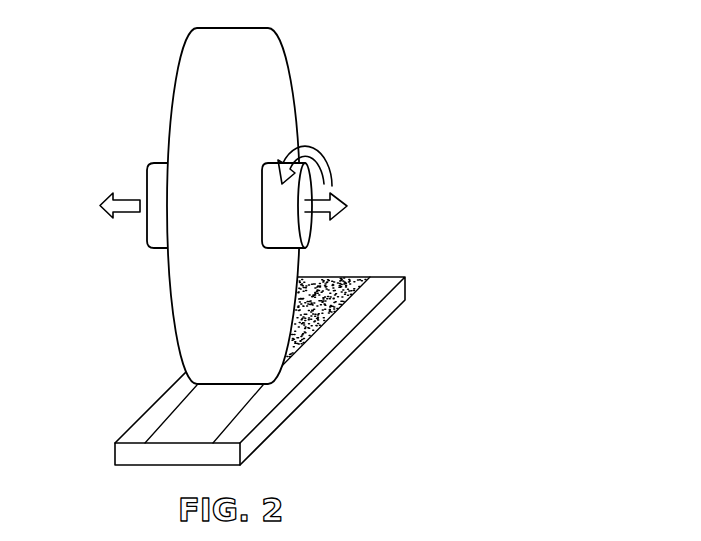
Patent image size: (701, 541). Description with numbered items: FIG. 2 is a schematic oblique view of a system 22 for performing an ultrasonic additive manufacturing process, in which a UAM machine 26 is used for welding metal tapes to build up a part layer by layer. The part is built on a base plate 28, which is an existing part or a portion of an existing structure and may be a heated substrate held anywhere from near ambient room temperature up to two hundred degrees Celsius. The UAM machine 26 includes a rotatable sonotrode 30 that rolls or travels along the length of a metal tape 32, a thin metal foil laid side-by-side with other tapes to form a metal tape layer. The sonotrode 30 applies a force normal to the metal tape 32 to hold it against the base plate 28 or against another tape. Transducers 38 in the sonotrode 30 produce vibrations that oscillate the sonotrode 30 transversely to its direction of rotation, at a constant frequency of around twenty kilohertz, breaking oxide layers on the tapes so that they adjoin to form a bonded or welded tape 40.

The system 22 is at (259, 192).
The UAM machine 26 is at (325, 145).
The base plate 28 is at (260, 371).
The sonotrode 30 is at (270, 70).
The metal tape 32 is at (203, 413).
The transducers 38 is at (157, 182).
The bonded or welded tape 40 is at (322, 307).